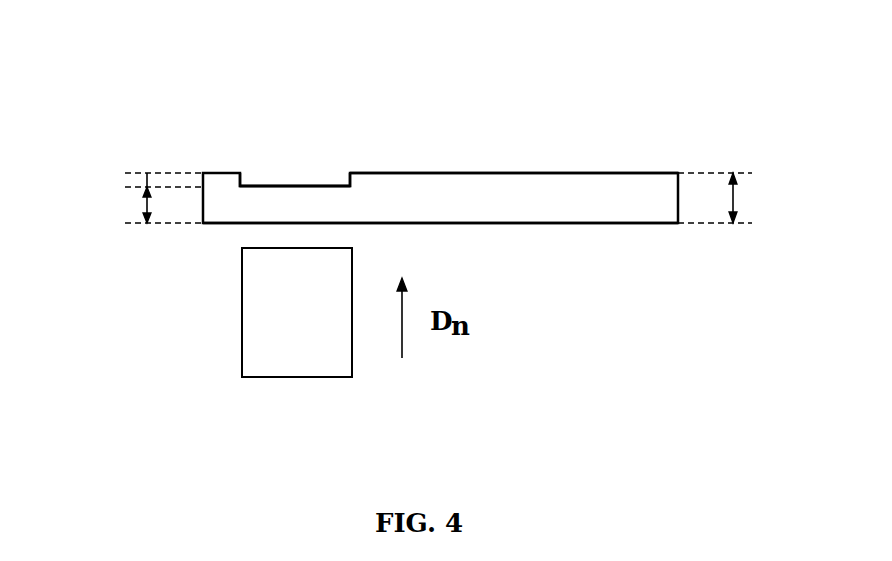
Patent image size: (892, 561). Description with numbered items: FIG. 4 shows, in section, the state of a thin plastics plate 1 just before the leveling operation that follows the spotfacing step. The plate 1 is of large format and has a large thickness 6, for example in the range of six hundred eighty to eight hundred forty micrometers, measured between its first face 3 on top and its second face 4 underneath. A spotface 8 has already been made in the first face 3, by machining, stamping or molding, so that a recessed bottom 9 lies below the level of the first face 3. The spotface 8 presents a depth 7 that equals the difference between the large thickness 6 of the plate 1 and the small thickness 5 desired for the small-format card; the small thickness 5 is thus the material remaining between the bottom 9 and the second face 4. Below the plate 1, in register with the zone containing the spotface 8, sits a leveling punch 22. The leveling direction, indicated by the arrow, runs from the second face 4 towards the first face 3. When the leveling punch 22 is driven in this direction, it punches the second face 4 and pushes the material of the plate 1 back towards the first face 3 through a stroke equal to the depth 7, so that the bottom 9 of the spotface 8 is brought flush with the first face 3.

The plate 1 is at (440, 143).
The first face 3 is at (536, 138).
The second face 4 is at (463, 261).
The small thickness 5 is at (156, 198).
The large thickness 6 is at (726, 198).
The depth 7 is at (147, 187).
The spotface 8 is at (246, 110).
The bottom 9 is at (324, 139).
The leveling punch 22 is at (254, 312).